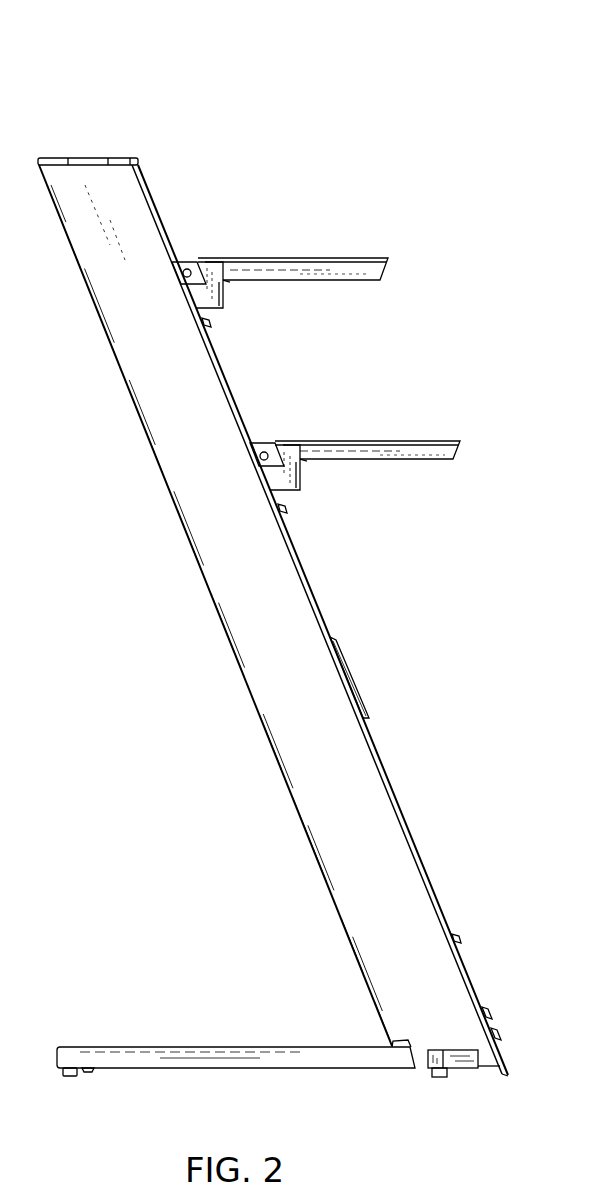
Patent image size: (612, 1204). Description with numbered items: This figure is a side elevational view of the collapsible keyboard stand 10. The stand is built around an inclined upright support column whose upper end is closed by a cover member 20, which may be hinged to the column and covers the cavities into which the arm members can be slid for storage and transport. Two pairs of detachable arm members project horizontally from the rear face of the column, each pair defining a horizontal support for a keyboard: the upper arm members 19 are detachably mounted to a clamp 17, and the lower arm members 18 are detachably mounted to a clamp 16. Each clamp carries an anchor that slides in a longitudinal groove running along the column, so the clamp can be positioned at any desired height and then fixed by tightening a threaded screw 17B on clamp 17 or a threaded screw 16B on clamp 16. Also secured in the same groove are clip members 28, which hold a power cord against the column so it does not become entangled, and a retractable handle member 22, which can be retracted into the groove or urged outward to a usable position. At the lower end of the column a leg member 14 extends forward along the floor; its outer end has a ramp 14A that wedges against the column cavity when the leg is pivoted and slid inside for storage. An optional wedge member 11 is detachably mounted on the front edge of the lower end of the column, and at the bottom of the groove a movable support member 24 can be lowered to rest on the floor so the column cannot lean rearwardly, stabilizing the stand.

The collapsible keyboard stand 10 is at (240, 88).
The cover member 20 is at (78, 158).
The arm member 19 is at (350, 258).
The clamp 17 is at (228, 293).
The threaded screw 17B is at (190, 268).
The clip member 28 is at (210, 322).
The arm member 18 is at (420, 441).
The clamp 16 is at (305, 480).
The threaded screw 16B is at (267, 451).
The retractable handle member 22 is at (352, 682).
The leg member 14 is at (105, 1047).
The ramp 14A is at (86, 1078).
The wedge member 11 is at (390, 1043).
The movable support member 24 is at (507, 1062).